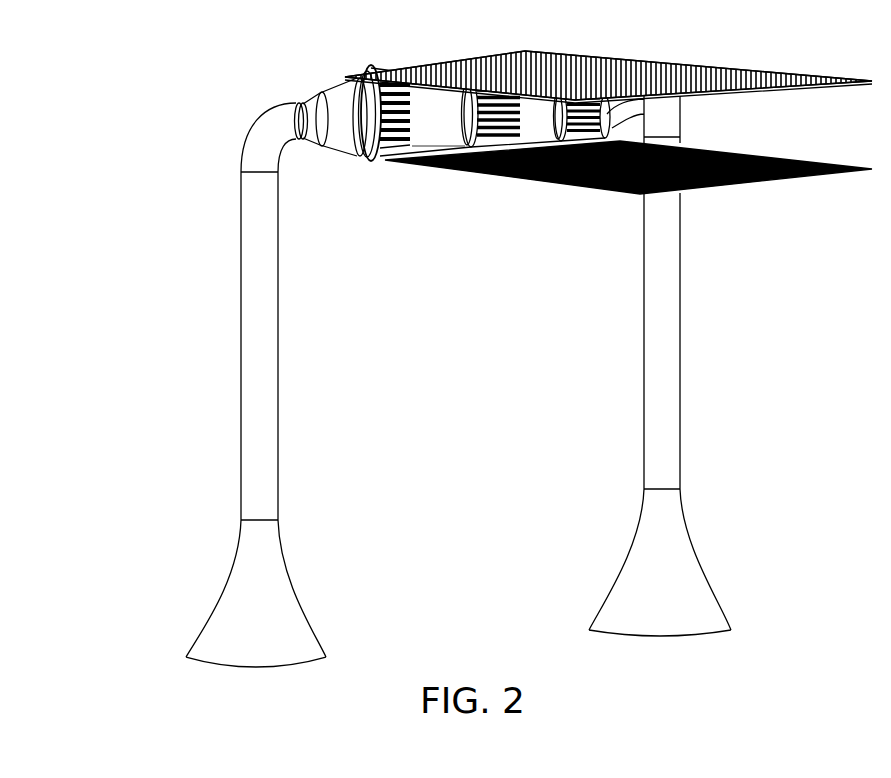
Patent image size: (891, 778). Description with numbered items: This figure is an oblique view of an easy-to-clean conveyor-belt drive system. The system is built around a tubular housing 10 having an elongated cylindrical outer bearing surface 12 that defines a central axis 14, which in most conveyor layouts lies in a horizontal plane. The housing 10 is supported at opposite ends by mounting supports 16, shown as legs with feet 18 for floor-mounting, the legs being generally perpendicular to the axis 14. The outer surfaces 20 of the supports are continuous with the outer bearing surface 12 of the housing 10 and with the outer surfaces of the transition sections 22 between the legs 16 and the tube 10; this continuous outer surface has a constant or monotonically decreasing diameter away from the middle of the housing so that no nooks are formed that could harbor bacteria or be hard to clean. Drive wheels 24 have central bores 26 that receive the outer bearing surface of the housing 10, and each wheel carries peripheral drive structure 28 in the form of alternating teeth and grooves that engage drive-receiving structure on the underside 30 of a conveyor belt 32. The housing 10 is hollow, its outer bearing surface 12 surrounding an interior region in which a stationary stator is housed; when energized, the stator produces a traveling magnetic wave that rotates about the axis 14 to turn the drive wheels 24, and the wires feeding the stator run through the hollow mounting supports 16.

The tubular housing 10 is at (348, 160).
The outer bearing surface 12 is at (435, 130).
The central axis 14 is at (293, 125).
The mounting supports 16 is at (278, 414).
The feet 18 is at (297, 612).
The outer surfaces of the supports 20 is at (272, 222).
The transition sections 22 is at (293, 102).
The drive wheels 24 is at (497, 176).
The central bores 26 is at (343, 87).
The peripheral drive structure 28 is at (610, 121).
The underside of conveyor belt 30 is at (777, 158).
The conveyor belt 32 is at (780, 70).